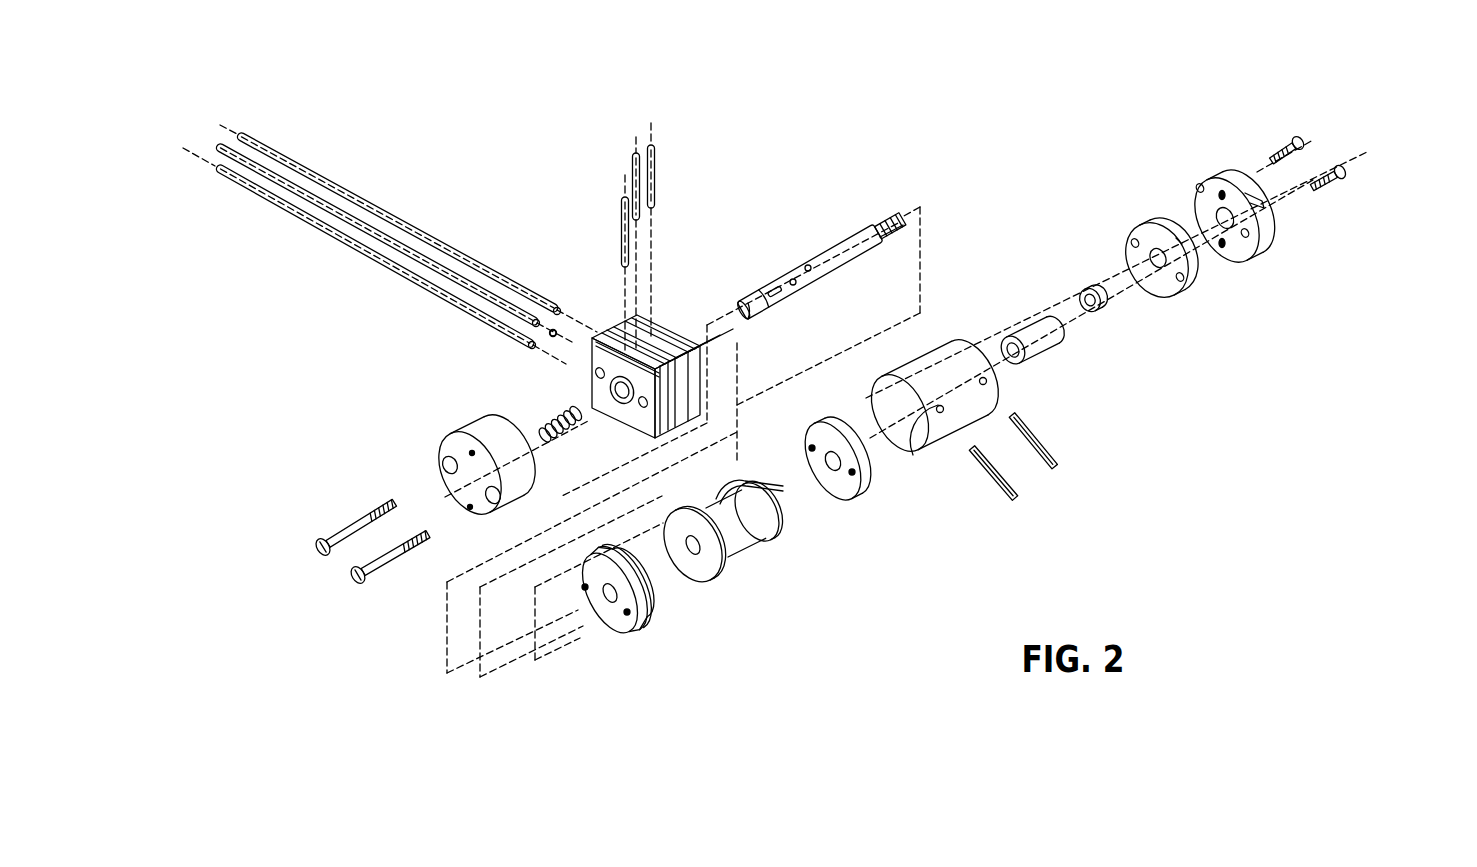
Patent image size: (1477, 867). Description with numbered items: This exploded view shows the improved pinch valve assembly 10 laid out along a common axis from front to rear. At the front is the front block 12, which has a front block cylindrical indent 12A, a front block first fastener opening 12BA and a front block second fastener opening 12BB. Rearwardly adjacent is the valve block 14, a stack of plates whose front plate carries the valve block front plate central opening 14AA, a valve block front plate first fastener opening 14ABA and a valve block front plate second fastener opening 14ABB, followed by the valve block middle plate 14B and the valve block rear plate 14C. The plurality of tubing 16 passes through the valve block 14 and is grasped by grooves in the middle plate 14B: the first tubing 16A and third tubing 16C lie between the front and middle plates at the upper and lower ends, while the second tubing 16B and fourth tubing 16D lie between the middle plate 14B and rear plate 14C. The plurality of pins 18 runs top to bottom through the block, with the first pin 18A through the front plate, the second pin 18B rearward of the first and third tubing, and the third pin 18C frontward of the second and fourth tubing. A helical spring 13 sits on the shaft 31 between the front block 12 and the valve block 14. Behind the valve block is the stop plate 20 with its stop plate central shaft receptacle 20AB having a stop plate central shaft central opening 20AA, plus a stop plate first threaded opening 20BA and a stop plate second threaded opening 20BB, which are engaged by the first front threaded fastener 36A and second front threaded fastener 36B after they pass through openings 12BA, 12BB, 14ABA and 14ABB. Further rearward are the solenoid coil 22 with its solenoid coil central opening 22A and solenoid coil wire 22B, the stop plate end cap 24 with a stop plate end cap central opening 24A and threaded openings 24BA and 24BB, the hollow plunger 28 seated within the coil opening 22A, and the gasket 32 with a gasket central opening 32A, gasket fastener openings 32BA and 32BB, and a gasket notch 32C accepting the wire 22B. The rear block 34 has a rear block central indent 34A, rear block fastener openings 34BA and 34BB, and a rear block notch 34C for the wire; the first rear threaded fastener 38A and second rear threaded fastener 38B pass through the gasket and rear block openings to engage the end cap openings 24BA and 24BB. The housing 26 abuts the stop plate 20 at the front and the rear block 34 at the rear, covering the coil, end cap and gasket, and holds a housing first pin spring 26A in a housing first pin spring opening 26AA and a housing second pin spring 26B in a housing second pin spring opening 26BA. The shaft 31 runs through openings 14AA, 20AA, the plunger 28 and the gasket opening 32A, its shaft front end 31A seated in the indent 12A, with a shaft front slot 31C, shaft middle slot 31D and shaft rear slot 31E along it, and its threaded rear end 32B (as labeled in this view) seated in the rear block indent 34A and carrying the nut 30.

The improved pinch valve assembly 10 is at (505, 66).
The front block 12 is at (439, 497).
The front block cylindrical indent 12A is at (501, 512).
The front block first fastener opening 12BA is at (443, 462).
The front block second fastener opening 12BB is at (490, 498).
The helical spring 13 is at (563, 440).
The valve block 14 is at (569, 343).
The valve block front plate central opening 14AA is at (620, 396).
The valve block front plate first fastener opening 14ABA is at (595, 373).
The valve block front plate second fastener opening 14ABB is at (640, 405).
The valve block middle plate 14B is at (612, 320).
The valve block rear plate 14C is at (665, 318).
The plurality of tubing 16 is at (342, 199).
The first tubing 16A is at (217, 142).
The second tubing 16B is at (240, 130).
The third tubing 16C is at (214, 168).
The fourth tubing 16D is at (532, 310).
The plurality of pins 18 is at (654, 213).
The first pin 18A is at (628, 242).
The second pin 18B is at (654, 150).
The third pin 18C is at (638, 187).
The stop plate 20 is at (631, 652).
The stop plate central shaft central opening 20AA is at (608, 605).
The stop plate central shaft receptacle 20AB is at (625, 580).
The stop plate first threaded opening 20BA is at (587, 587).
The stop plate second threaded opening 20BB is at (627, 616).
The solenoid coil 22 is at (744, 524).
The solenoid coil central opening 22A is at (695, 556).
The solenoid coil wire 22B is at (762, 488).
The stop plate end cap 24 is at (874, 490).
The stop plate end cap central opening 24A is at (832, 470).
The stop plate end cap first fastener threaded opening 24BA is at (816, 477).
The stop plate end cap second fastener threaded opening 24BB is at (860, 482).
The housing 26 is at (1003, 441).
The housing first pin spring 26A is at (1017, 493).
The housing first pin spring opening 26AA is at (938, 413).
The housing second pin spring 26B is at (1055, 454).
The housing second pin spring opening 26BA is at (987, 381).
The hollow plunger 28 is at (1048, 340).
The nut 30 is at (1090, 288).
The shaft 31 is at (863, 248).
The shaft front end 31A is at (758, 312).
The shaft front slot 31C is at (777, 284).
The shaft middle slot 31D is at (792, 278).
The shaft rear slot 31E is at (809, 271).
The gasket 32 is at (1196, 230).
The gasket central opening 32A is at (1160, 268).
The threaded end 32B is at (880, 240).
The gasket first fastener opening 32BA is at (1134, 239).
The gasket second fastener opening 32BB is at (1186, 277).
The gasket notch 32C is at (1178, 240).
The rear block 34 is at (1304, 221).
The rear block central indent 34A is at (1232, 219).
The rear block first fastener opening 34BA is at (1201, 184).
The rear block second fastener opening 34BB is at (1250, 235).
The rear block notch 34C is at (1254, 197).
The first front threaded fastener 36A is at (316, 546).
The second front threaded fastener 36B is at (346, 603).
The first rear threaded fastener 38A is at (1297, 136).
The second rear threaded fastener 38B is at (1347, 172).